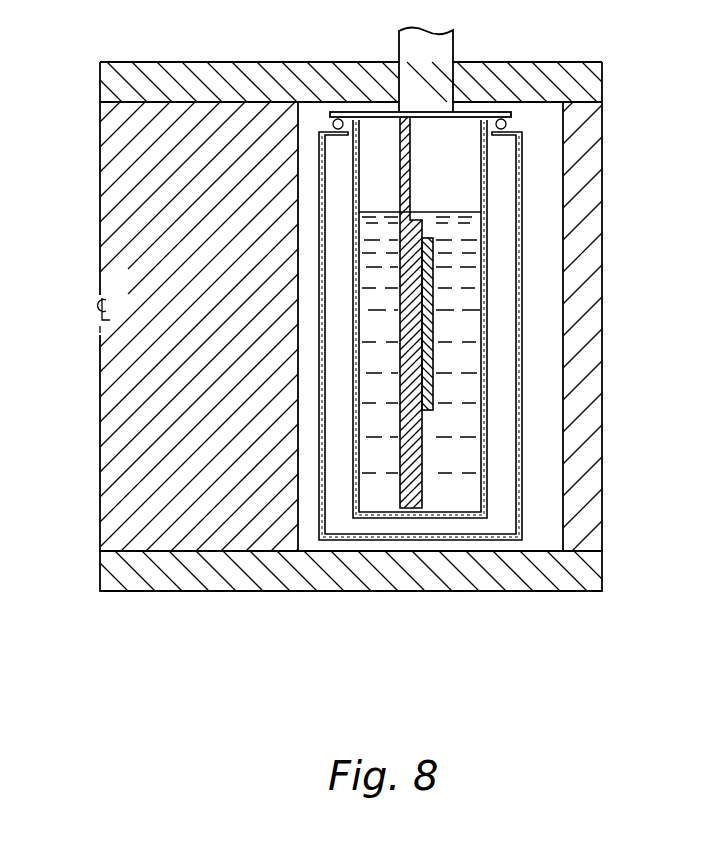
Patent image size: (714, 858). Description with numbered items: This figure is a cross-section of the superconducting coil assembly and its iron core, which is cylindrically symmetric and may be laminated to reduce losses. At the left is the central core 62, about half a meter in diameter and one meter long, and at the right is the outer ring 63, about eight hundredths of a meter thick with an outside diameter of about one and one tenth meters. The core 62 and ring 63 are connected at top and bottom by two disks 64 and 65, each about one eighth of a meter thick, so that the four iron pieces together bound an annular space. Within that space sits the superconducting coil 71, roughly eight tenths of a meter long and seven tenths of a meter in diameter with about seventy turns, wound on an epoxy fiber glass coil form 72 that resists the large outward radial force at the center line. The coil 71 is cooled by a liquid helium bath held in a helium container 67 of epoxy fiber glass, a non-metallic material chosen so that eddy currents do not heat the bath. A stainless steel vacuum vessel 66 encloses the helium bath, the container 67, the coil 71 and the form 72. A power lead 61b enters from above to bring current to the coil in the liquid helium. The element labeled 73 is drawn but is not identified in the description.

The power lead 61b is at (453, 40).
The central core 62 is at (103, 182).
The ring 63 is at (604, 184).
The disk 64 is at (247, 62).
The disk 65 is at (530, 591).
The vacuum vessel 66 is at (523, 270).
The helium container 67 is at (488, 337).
The superconducting coil 71 is at (433, 383).
The coil form 72 is at (420, 457).
The support bar 73 is at (507, 115).